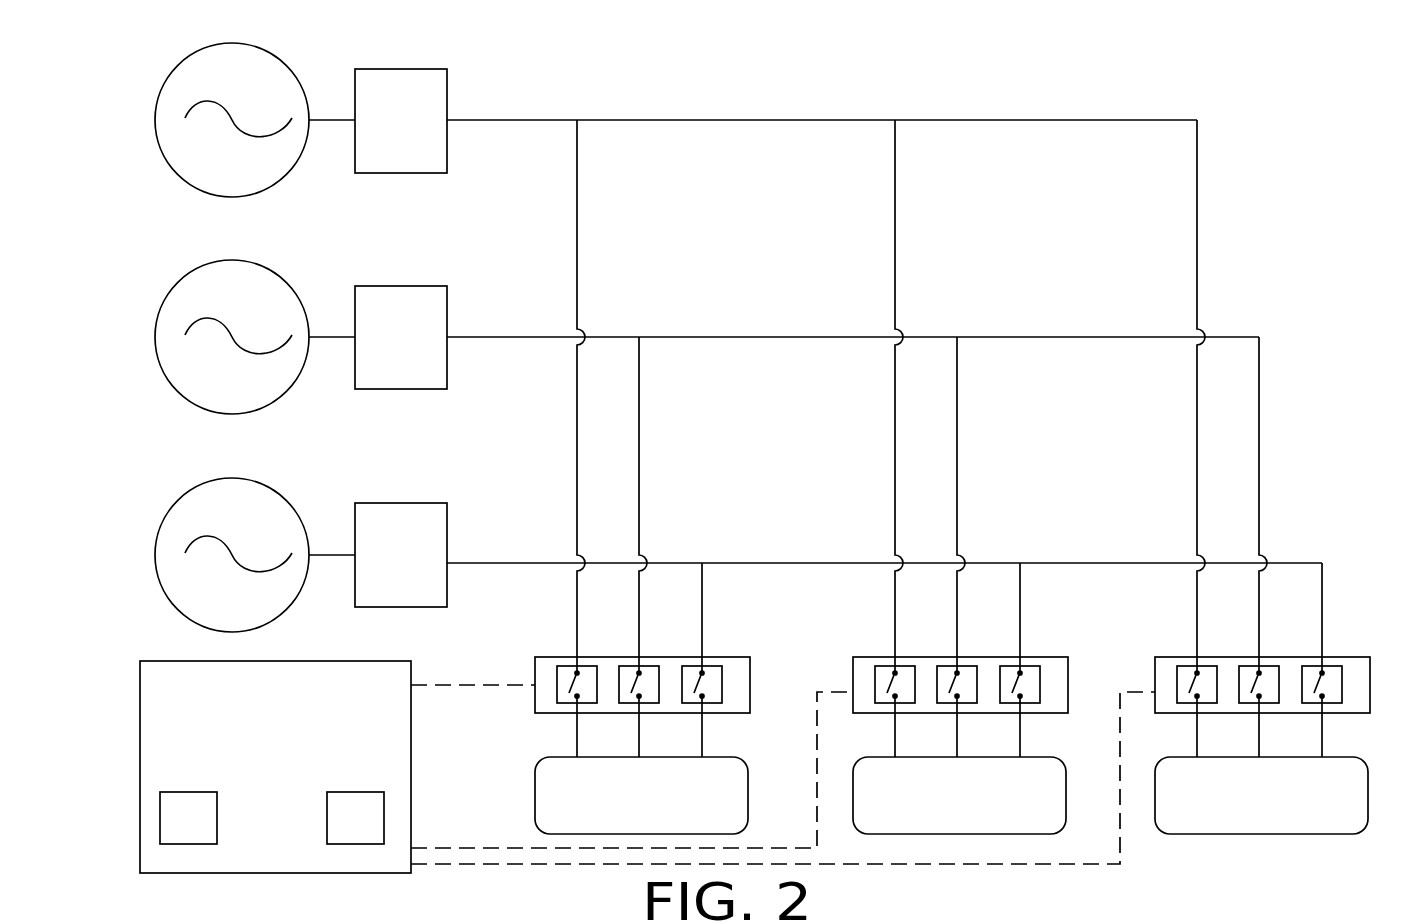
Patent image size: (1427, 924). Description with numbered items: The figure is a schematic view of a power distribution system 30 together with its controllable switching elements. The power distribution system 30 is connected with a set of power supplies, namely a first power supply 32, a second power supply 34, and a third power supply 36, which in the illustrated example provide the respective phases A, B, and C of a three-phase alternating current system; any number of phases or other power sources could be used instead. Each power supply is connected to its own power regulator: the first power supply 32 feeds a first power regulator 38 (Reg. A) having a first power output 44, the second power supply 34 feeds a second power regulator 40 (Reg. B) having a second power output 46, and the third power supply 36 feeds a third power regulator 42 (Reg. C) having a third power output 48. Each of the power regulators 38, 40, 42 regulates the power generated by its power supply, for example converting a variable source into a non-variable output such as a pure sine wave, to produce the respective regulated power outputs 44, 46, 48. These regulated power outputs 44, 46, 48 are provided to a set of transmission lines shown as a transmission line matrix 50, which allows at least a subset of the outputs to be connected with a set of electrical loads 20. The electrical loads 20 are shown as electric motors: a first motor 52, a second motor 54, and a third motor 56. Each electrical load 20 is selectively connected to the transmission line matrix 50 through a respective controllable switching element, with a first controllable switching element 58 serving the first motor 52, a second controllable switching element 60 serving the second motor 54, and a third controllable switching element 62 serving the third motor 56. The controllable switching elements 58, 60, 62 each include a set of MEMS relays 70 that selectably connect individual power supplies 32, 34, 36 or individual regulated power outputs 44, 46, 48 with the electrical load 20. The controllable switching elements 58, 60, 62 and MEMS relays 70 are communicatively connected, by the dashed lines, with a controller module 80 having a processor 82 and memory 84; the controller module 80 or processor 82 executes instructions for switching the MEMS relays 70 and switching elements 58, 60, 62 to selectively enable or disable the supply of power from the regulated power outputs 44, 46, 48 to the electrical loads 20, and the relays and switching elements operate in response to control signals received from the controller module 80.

The electrical load 20 is at (727, 752).
The power distribution system 30 is at (898, 46).
The first power supply 32 is at (260, 48).
The second power supply 34 is at (260, 265).
The third power supply 36 is at (260, 483).
The first power regulator 38 is at (407, 69).
The second power regulator 40 is at (402, 286).
The third power regulator 42 is at (417, 503).
The first power output 44 is at (455, 112).
The second power output 46 is at (455, 329).
The third power output 48 is at (455, 552).
The transmission line matrix 50 is at (1222, 203).
The first motor 52 is at (733, 812).
The second motor 54 is at (1051, 812).
The third motor 56 is at (1351, 812).
The first controllable switching element 58 is at (722, 657).
The second controllable switching element 60 is at (1040, 657).
The third controllable switching element 62 is at (1342, 657).
The MEMS relay 70 is at (687, 655).
The controller module 80 is at (295, 831).
The processor 82 is at (207, 831).
The memory 84 is at (373, 831).